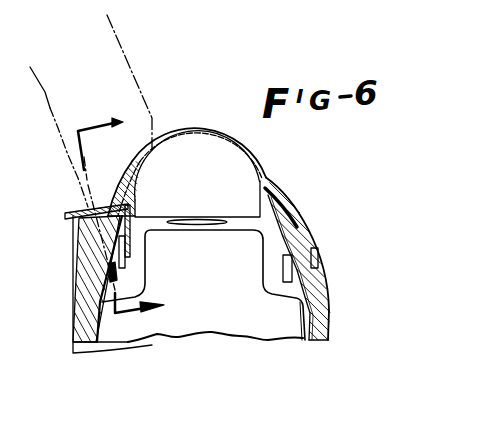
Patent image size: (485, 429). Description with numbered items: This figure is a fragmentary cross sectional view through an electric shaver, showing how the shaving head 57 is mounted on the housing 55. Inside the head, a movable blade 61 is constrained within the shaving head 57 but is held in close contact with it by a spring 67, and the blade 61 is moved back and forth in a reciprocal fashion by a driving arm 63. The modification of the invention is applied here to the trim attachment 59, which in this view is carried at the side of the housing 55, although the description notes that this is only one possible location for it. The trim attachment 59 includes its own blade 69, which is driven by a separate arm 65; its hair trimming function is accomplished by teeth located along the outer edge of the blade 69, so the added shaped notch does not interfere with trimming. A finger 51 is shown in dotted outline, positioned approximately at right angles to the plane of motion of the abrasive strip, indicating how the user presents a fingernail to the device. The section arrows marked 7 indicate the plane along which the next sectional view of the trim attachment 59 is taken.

The finger 51 is at (151, 105).
The housing 55 is at (78, 303).
The shaving head 57 is at (208, 113).
The trim attachment 59 is at (63, 215).
The movable blade 61 is at (210, 151).
The driving arm 63 is at (191, 228).
The arm 65 is at (136, 251).
The spring 67 is at (229, 229).
The blade 69 is at (142, 215).
The section line 7- 7 is at (110, 106).